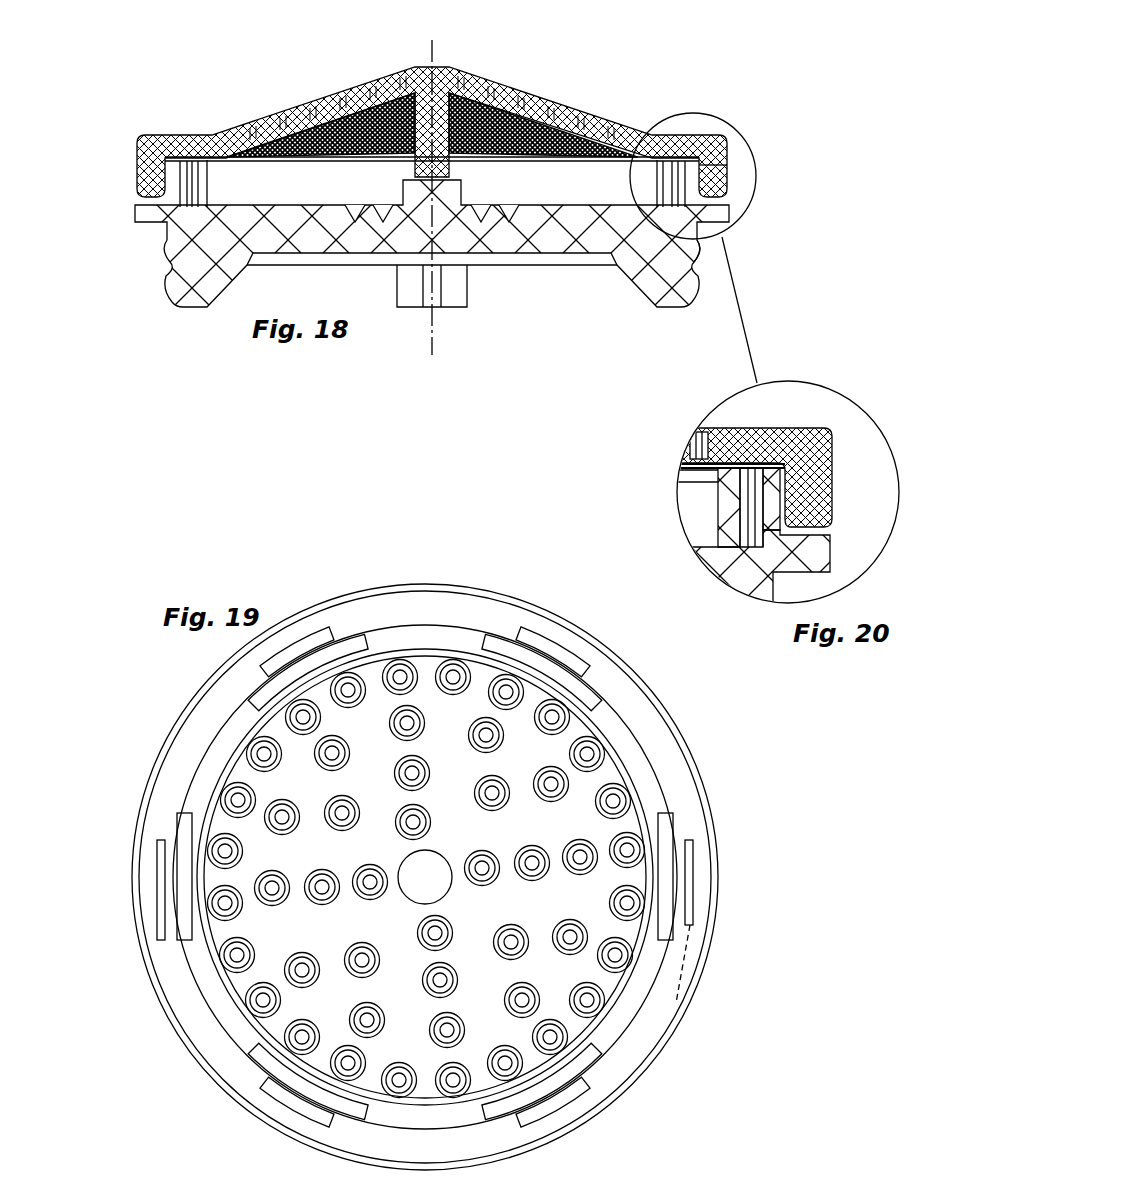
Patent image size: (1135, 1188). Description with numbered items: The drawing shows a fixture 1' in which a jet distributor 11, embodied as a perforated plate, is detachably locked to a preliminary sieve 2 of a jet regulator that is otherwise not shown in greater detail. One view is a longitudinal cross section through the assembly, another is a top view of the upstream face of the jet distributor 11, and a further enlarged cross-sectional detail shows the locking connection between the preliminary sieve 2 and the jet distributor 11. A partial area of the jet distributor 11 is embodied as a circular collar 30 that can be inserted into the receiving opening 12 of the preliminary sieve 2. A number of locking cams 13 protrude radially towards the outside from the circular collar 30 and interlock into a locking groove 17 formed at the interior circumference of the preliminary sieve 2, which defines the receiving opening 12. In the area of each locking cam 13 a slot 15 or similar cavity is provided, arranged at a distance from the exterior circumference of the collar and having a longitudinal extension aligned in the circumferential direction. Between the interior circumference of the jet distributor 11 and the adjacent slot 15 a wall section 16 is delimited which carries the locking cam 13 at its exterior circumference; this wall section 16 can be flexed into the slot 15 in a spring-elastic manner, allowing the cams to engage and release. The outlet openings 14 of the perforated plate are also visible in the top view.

In FIG. 18, the fixture 1' is at (478, 203).
In FIG. 18, the preliminary sieve 2 is at (548, 104).
In FIG. 20, the preliminary sieve 2 is at (806, 425).
In FIG. 18, the jet distributor 11 is at (577, 230).
In FIG. 19, the jet distributor 11 is at (459, 708).
In FIG. 18, the receiving opening 12 is at (242, 192).
In FIG. 19, the locking cam 13 is at (574, 640).
In FIG. 19, the outlet nozzles 14 is at (615, 957).
In FIG. 18, the slot 15 is at (698, 232).
In FIG. 20, the slot 15 is at (742, 538).
In FIG. 19, the slot 15 is at (598, 705).
In FIG. 19, the wall section 16 is at (516, 640).
In FIG. 20, the locking groove 17 is at (783, 490).
In FIG. 18, the circular collar 30 is at (746, 170).
In FIG. 20, the circular collar 30 is at (795, 473).
In FIG. 19, the circular collar 30 is at (643, 762).